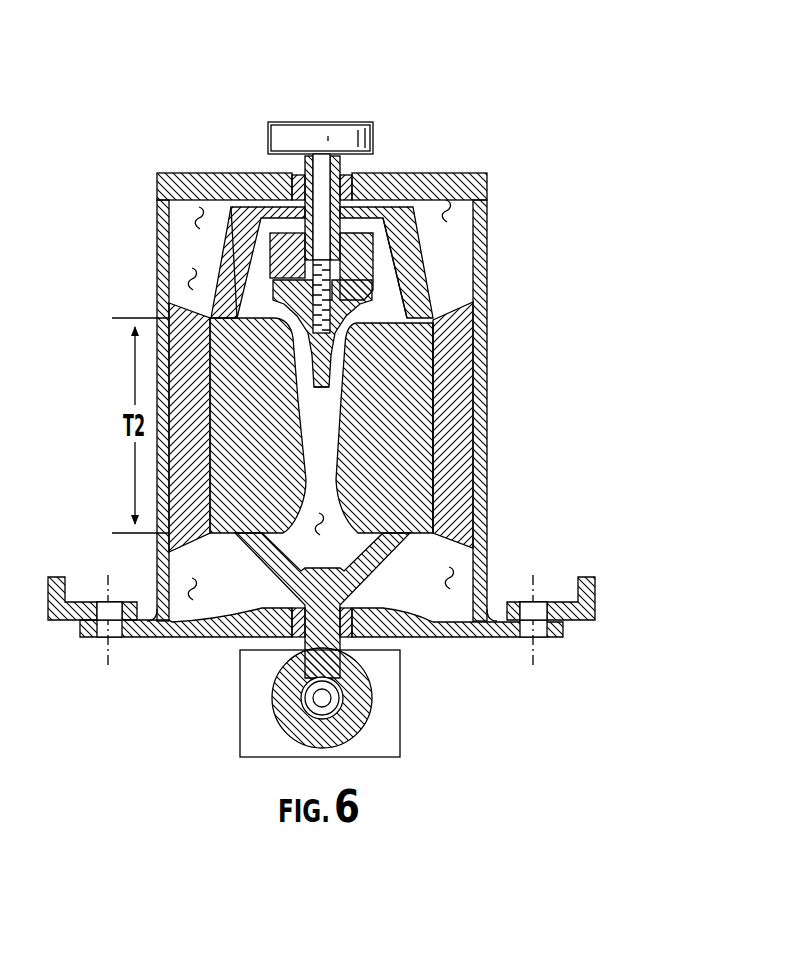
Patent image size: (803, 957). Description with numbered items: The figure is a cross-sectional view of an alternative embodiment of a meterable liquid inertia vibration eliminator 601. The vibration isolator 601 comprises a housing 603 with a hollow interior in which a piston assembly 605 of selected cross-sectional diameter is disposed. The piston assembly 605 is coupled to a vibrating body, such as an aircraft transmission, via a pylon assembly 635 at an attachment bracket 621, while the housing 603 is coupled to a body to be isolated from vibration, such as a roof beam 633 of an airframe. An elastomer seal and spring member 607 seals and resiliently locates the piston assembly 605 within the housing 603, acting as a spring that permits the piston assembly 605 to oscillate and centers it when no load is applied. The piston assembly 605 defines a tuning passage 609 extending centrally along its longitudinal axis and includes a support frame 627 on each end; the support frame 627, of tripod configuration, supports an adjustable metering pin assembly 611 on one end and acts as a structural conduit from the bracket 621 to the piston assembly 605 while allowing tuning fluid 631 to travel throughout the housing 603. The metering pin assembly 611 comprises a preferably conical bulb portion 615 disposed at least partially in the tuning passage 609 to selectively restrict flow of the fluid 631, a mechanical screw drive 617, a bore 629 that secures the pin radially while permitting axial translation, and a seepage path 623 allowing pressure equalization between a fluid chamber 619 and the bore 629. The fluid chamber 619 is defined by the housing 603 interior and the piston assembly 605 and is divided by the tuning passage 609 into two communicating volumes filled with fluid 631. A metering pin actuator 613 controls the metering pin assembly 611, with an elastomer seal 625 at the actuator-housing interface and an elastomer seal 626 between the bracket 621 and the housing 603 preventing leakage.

The meterable liquid inertia vibration eliminator 601 is at (496, 117).
The housing 603 is at (483, 638).
The piston assembly 605 is at (337, 397).
The elastomer seal and spring member 607 is at (483, 432).
The tuning passage 609 is at (438, 399).
The adjustable metering pin assembly 611 is at (336, 302).
The metering pin actuator 613 is at (284, 122).
The bulb portion 615 is at (336, 332).
The mechanical screw drive 617 is at (338, 283).
The fluid chamber 619 is at (190, 278).
The attachment bracket 621 is at (374, 697).
The seepage path 623 is at (258, 206).
The elastomer seal 625 is at (297, 172).
The elastomer seal 626 is at (292, 614).
The support frame 627 is at (230, 256).
The bore 629 is at (346, 262).
The vibration-isolation tuning fluid 631 is at (197, 218).
The roof beam 633 is at (57, 577).
The pylon assembly 635 is at (400, 756).